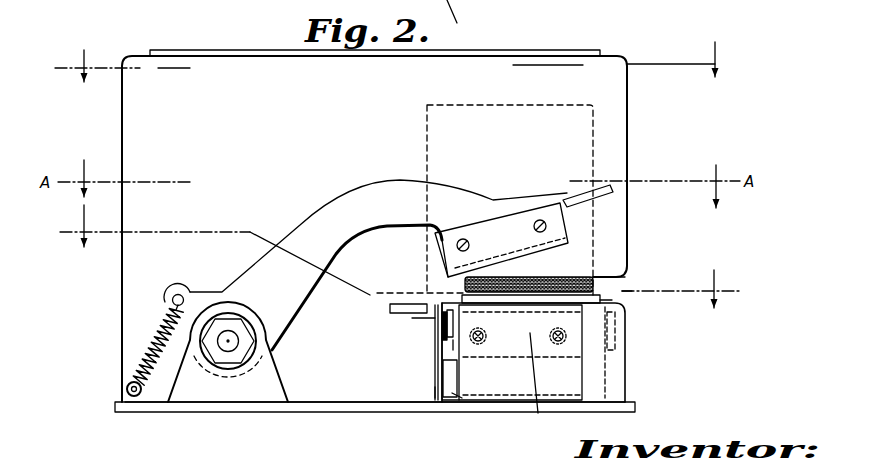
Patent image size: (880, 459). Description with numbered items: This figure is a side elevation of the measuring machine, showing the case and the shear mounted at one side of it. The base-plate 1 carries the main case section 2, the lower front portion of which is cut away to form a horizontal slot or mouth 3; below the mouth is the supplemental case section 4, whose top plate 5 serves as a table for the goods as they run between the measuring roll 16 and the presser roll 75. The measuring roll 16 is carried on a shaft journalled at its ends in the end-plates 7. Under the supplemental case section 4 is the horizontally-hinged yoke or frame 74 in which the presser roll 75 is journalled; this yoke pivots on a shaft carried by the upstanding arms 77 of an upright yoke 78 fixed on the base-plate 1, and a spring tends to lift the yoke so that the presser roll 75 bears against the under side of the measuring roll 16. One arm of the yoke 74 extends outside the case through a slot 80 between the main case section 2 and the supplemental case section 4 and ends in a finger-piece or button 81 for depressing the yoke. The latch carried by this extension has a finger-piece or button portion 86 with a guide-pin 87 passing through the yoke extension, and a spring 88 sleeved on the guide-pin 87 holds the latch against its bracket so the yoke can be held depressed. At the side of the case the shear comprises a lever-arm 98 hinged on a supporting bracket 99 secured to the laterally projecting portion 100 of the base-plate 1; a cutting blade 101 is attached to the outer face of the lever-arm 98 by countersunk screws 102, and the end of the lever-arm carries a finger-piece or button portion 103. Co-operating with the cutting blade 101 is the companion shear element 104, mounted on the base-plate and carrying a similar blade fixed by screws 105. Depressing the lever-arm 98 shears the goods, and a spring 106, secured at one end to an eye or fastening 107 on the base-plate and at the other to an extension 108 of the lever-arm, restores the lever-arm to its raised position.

The base-plate 1 is at (345, 405).
The main case section 2 is at (622, 130).
The horizontal slot or mouth 3 is at (622, 280).
The supplemental case section 4 is at (622, 368).
The top plate 5 is at (613, 300).
The end-plates 7 is at (401, 263).
The measuring roll 16 is at (570, 278).
The horizontally-hinged yoke or frame 74 is at (440, 337).
The presser roll 75 is at (452, 350).
The upstanding arms 77 is at (442, 373).
The upright yoke 78 is at (455, 397).
The slot 80 is at (435, 387).
The finger-piece or button 81 is at (403, 306).
The finger-piece or button portion 86 is at (450, 313).
The guide-pin 87 is at (424, 325).
The spring 88 is at (468, 20).
The lever-arm 98 is at (325, 215).
The supporting bracket 99 is at (258, 378).
The laterally projecting portion 100 is at (290, 410).
The cutting blade 101 is at (498, 237).
The countersunk screws 102 is at (457, 247).
The finger-piece or button portion 103 is at (600, 185).
The companion shear element 104 is at (545, 0).
The screws 105 is at (632, 400).
The spring 106 is at (150, 338).
The eye or fastening 107 is at (127, 392).
The extension 108 is at (195, 292).